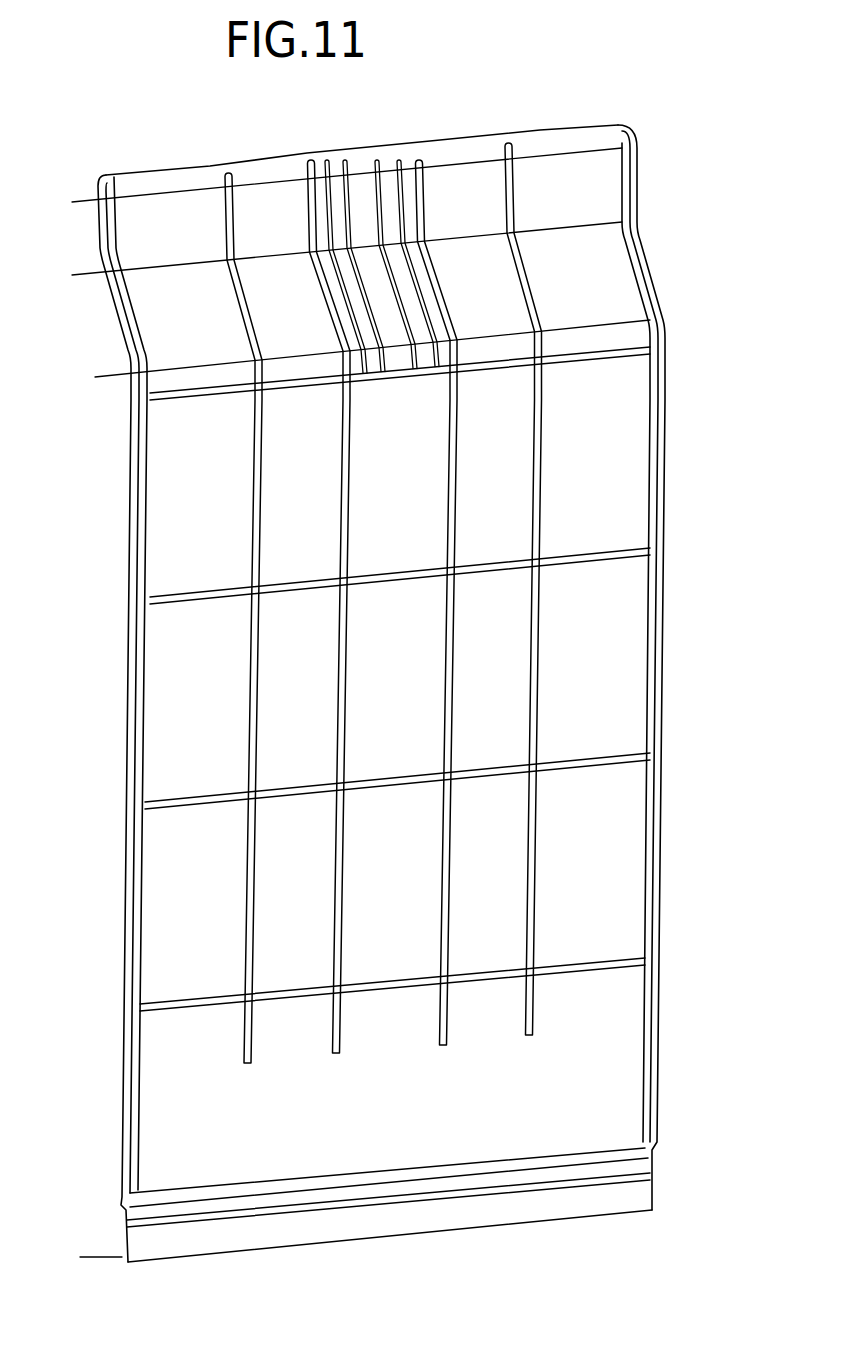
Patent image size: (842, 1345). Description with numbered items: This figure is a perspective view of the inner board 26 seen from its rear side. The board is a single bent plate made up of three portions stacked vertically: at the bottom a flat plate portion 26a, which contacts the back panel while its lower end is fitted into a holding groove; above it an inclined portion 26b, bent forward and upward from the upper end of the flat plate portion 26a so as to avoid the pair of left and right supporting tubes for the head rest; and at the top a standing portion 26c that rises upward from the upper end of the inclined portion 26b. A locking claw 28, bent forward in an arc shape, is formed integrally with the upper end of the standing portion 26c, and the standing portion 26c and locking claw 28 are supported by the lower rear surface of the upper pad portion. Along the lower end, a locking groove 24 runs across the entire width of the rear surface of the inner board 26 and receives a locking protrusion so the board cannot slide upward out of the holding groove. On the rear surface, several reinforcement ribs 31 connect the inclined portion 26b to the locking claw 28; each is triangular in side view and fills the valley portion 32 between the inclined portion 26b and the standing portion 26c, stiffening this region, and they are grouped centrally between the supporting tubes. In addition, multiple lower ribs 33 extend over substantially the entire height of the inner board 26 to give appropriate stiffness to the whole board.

The locking groove 24 is at (362, 1207).
The inner board 26 is at (676, 651).
The flat plate portion 26a is at (118, 380).
The inclined portion 26b is at (96, 277).
The standing portion 26c is at (96, 204).
The locking claw 28 is at (105, 172).
The reinforcement ribs 31 is at (335, 300).
The valley portion 32 is at (577, 265).
The ribs 33 is at (143, 558).